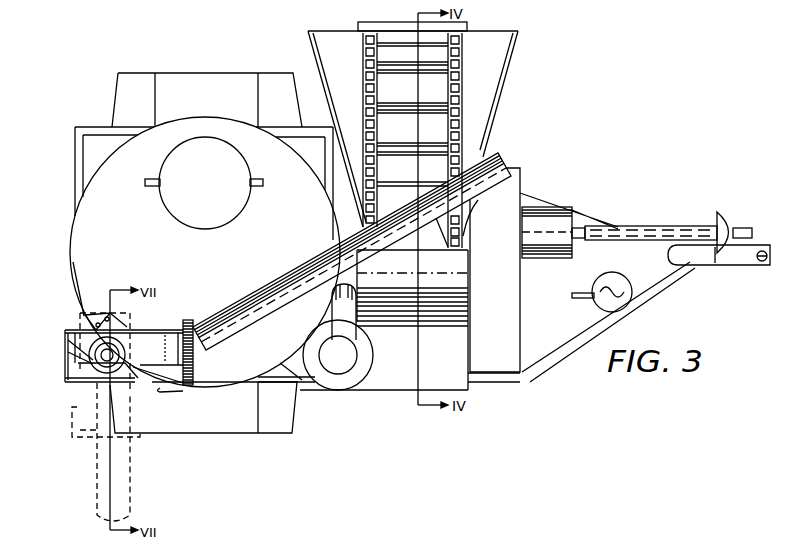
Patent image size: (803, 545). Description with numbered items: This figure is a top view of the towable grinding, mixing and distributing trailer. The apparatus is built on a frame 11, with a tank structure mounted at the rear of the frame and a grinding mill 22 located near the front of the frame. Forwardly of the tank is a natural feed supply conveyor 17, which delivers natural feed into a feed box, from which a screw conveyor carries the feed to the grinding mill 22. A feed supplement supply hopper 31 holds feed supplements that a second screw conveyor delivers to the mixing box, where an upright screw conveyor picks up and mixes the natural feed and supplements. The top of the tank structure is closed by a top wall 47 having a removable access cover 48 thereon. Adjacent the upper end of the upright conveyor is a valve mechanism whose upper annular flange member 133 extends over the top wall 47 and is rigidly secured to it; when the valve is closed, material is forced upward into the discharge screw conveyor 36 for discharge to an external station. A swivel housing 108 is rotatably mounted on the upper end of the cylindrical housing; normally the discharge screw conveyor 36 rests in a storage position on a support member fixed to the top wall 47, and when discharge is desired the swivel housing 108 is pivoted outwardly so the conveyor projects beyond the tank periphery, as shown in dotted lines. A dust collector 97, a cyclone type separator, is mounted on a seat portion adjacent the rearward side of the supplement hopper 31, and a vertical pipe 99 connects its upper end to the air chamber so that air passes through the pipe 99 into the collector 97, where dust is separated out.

The frame 11 is at (558, 366).
The natural feed supply conveyor 17 is at (492, 90).
The grinding mill 22 is at (505, 368).
The feed supplement supply hopper 31 is at (391, 394).
The discharge screw conveyor 36 is at (236, 294).
The top wall 47 is at (75, 233).
The removable access cover 48 is at (183, 213).
The dust collector 97 is at (335, 384).
The vertical pipe 99 is at (346, 305).
The swivel housing 108 is at (155, 320).
The upper annular flange member 133 is at (99, 323).